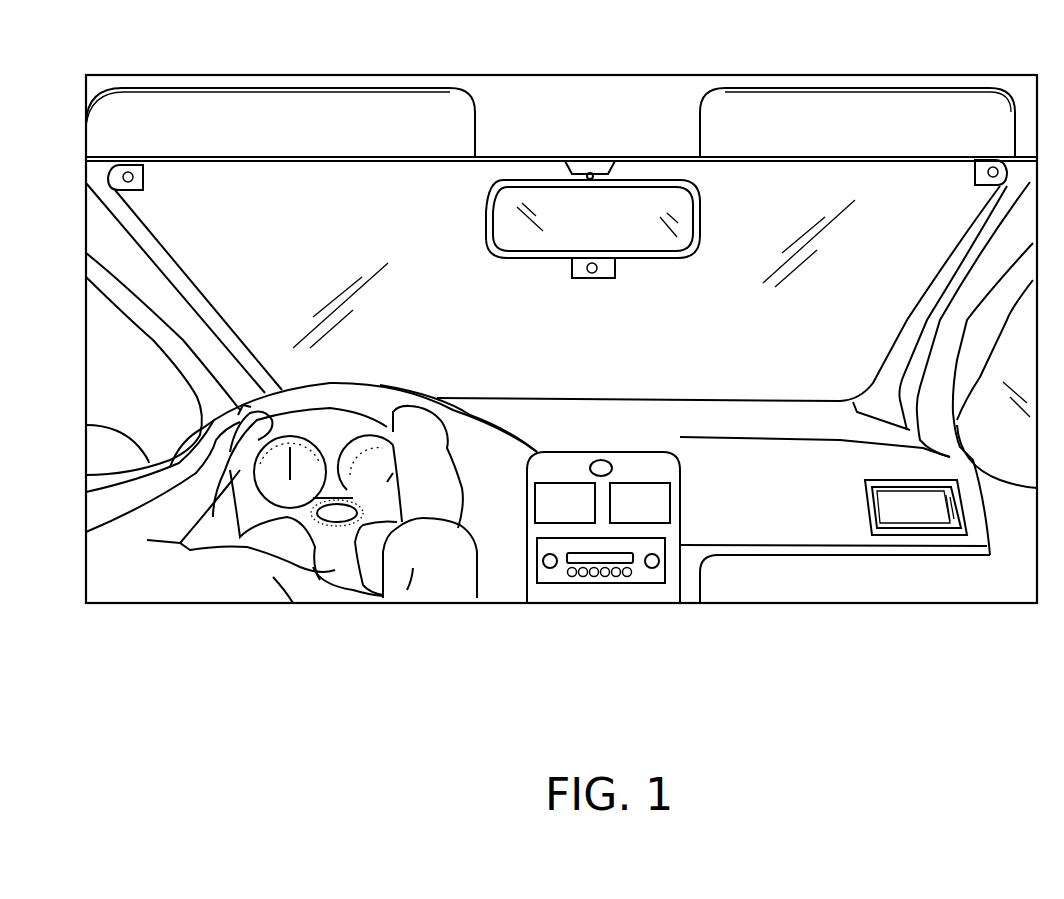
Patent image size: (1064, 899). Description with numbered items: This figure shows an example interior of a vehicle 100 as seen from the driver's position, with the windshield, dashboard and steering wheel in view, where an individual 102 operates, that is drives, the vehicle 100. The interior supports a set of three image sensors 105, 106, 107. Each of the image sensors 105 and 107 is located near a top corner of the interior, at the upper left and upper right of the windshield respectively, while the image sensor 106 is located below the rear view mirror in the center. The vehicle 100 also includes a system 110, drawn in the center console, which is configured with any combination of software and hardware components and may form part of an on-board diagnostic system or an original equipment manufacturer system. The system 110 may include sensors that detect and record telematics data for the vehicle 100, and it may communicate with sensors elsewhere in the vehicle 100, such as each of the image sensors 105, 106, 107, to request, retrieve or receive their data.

The vehicle 100 is at (649, 44).
The individual 102 is at (160, 584).
The image sensor 105 is at (143, 172).
The image sensor 106 is at (596, 278).
The image sensor 107 is at (975, 177).
The system 110 is at (640, 455).